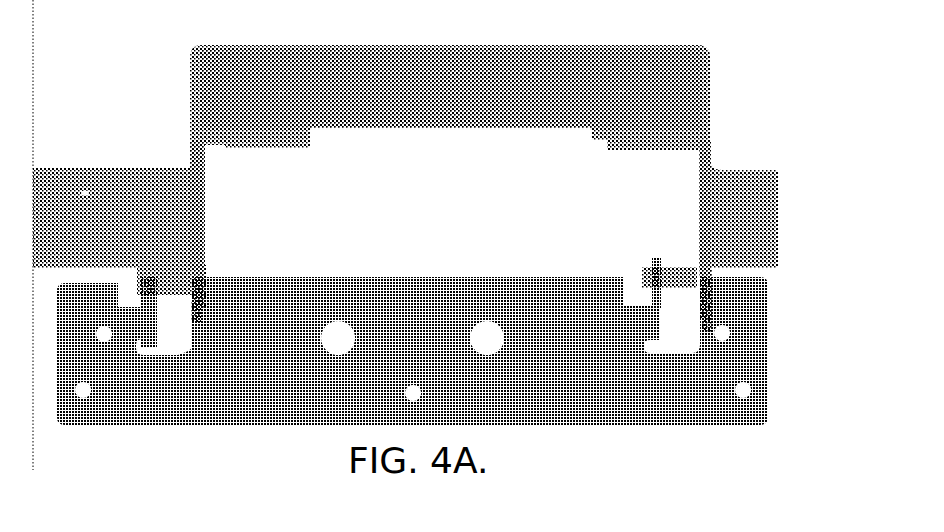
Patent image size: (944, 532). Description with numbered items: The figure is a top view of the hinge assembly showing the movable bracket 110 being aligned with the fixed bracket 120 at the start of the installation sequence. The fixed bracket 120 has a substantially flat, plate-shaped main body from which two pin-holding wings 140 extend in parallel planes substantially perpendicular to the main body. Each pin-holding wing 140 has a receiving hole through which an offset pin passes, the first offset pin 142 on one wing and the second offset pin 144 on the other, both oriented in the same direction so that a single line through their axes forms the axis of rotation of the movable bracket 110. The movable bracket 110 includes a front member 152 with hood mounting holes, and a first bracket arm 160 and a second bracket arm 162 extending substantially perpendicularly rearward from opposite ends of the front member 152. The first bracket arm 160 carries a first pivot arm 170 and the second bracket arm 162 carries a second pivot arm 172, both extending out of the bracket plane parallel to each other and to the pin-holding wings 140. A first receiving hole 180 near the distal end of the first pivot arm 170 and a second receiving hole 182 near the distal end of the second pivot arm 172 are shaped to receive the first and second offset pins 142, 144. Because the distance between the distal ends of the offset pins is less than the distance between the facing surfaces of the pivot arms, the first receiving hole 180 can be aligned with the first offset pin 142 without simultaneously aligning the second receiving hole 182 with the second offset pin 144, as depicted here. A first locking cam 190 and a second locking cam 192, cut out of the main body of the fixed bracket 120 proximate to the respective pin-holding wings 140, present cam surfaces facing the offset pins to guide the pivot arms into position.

The movable bracket 110 is at (183, 76).
The fixed bracket 120 is at (321, 411).
The pin-holding wings 140 is at (152, 303).
The first offset pin 142 is at (165, 280).
The second offset pin 144 is at (680, 275).
The front member 152 is at (422, 84).
The first bracket arm 160 is at (202, 162).
The second bracket arm 162 is at (700, 140).
The first pivot arm 170 is at (195, 313).
The second pivot arm 172 is at (706, 320).
The first receiving hole 180 is at (209, 278).
The second receiving hole 182 is at (722, 283).
The first locking cam 190 is at (177, 328).
The second locking cam 192 is at (683, 320).